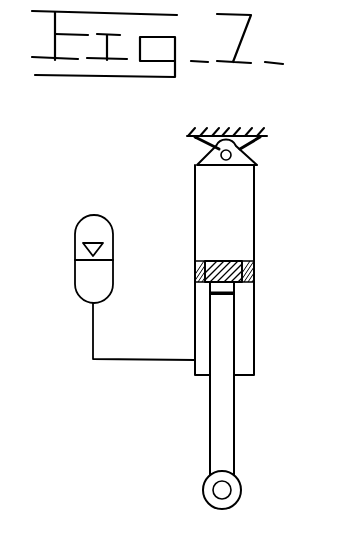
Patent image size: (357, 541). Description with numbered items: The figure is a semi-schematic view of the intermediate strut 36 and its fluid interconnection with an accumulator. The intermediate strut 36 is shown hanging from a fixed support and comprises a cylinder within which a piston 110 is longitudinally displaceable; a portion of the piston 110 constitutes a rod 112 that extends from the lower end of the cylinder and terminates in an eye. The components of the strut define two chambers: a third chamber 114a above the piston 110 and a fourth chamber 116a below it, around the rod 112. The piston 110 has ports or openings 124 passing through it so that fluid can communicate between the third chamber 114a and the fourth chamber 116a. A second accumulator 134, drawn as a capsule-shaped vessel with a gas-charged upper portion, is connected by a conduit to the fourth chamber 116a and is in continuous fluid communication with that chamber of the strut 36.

The intermediate strut 36 is at (190, 237).
The piston 110 is at (205, 283).
The rod 112 is at (218, 403).
The third chamber 114a is at (226, 211).
The fourth chamber 116a is at (195, 322).
The ports 124 is at (242, 262).
The second accumulator 134 is at (113, 219).